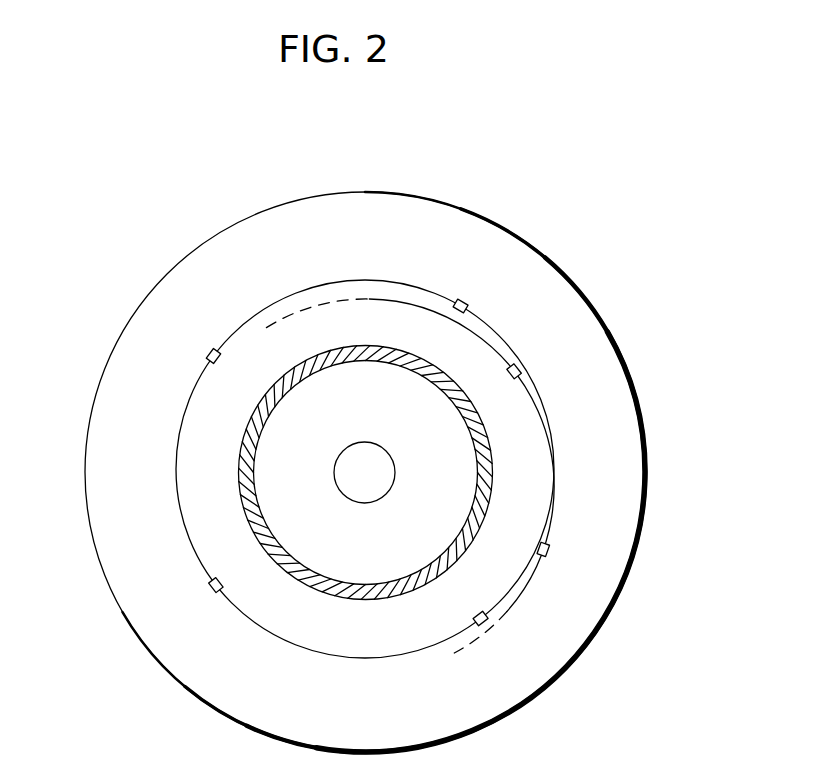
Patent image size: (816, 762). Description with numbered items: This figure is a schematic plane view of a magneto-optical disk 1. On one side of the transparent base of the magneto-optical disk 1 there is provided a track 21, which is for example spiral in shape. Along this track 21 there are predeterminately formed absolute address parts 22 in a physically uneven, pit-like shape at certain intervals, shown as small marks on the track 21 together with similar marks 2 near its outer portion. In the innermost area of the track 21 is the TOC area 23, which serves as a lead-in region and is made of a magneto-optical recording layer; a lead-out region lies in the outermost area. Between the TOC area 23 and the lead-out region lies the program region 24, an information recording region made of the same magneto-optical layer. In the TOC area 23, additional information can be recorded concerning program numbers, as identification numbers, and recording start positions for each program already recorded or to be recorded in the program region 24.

The magneto-optical disk 1 is at (182, 243).
The magnetic head / sensor element 2 is at (207, 355).
The track 21 is at (525, 350).
The absolute address parts 22 is at (465, 300).
The TOC area 23 is at (480, 423).
The program region 24 is at (607, 473).